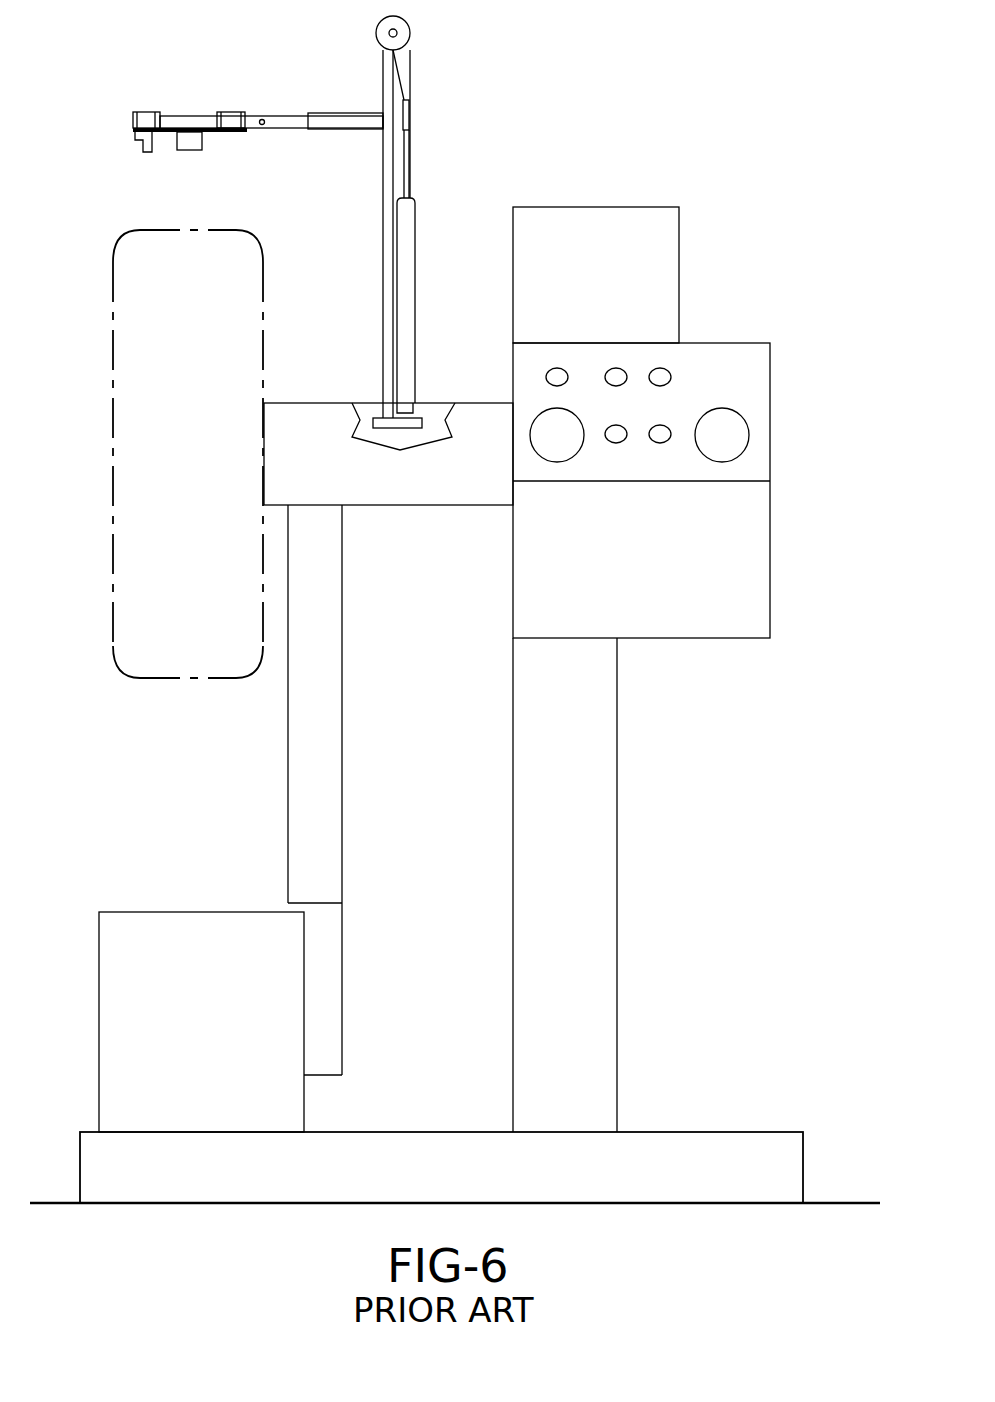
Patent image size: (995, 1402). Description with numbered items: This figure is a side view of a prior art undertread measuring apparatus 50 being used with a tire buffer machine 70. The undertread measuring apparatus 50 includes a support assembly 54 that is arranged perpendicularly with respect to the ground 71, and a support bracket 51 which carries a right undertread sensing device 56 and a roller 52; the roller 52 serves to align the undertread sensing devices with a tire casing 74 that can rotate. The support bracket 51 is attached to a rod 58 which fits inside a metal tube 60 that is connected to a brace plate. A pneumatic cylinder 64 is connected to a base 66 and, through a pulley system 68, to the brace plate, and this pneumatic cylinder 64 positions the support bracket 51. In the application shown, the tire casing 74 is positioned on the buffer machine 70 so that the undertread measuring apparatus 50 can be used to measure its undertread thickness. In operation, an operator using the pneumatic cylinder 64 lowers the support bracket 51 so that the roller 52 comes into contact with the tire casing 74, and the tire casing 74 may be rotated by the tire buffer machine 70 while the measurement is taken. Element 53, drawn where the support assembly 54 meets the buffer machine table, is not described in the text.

The undertread measuring apparatus 50 is at (447, 92).
The support bracket 51 is at (134, 128).
The roller 52 is at (150, 156).
The clamp 53 is at (386, 402).
The support assembly 54 is at (386, 250).
The right undertread sensing device 56 is at (190, 145).
The rod 58 is at (286, 116).
The metal tube 60 is at (356, 116).
The pneumatic cylinder 64 is at (405, 268).
The base 66 is at (405, 424).
The pulley system 68 is at (400, 28).
The tire buffer machine 70 is at (573, 812).
The ground 71 is at (820, 1203).
The tire casing 74 is at (136, 388).